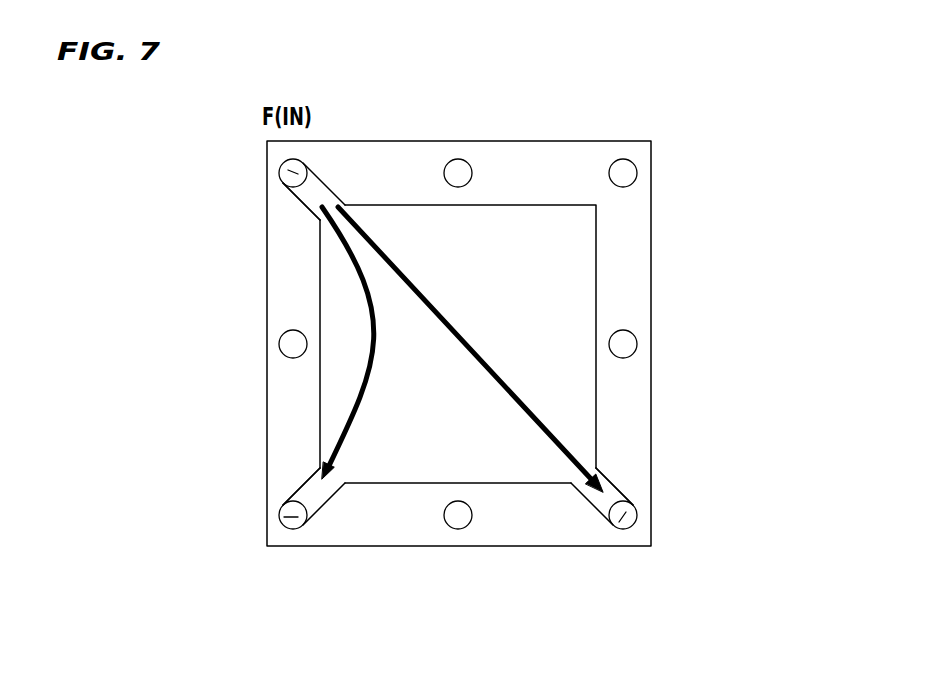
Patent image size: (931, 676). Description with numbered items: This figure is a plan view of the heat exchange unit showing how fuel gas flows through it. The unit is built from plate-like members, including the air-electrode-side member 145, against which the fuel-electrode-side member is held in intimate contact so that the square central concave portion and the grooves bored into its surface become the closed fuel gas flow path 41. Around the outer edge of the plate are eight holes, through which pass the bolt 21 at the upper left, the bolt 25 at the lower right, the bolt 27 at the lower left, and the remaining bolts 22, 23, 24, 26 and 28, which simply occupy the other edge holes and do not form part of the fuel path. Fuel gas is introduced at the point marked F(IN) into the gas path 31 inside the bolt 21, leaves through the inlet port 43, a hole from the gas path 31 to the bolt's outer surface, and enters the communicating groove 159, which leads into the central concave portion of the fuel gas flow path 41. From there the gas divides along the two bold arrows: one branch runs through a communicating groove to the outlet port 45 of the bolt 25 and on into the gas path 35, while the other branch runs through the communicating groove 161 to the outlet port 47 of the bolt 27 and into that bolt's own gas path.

The bolt 21 is at (300, 158).
The hole (157) 22 is at (458, 158).
The hole (157) 23 is at (637, 172).
The hole (157) 24 is at (637, 333).
The bolt 25 is at (637, 514).
The hole (157) 26 is at (460, 531).
The bolt 27 is at (293, 531).
The hole (157) 28 is at (279, 343).
The gas path 31 is at (294, 170).
The gas path 35 is at (623, 518).
The fuel gas flow path 41 is at (557, 263).
The inlet port 43 is at (307, 184).
The outlet port 45 is at (613, 496).
The outlet port 47 is at (305, 500).
The air-electrode-side member 145 is at (294, 517).
The communicating groove 159 is at (312, 197).
The communicating groove 161 is at (313, 490).